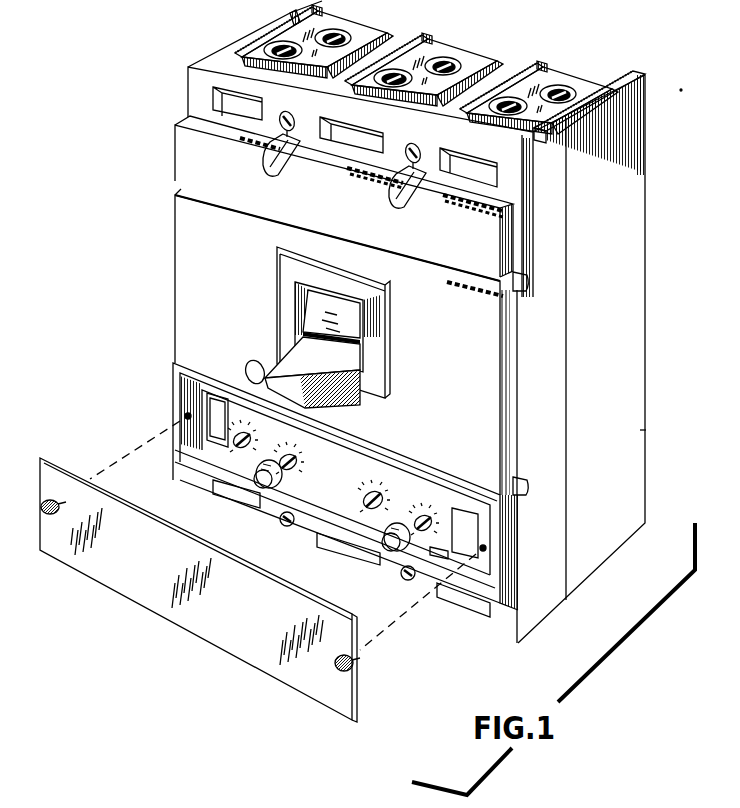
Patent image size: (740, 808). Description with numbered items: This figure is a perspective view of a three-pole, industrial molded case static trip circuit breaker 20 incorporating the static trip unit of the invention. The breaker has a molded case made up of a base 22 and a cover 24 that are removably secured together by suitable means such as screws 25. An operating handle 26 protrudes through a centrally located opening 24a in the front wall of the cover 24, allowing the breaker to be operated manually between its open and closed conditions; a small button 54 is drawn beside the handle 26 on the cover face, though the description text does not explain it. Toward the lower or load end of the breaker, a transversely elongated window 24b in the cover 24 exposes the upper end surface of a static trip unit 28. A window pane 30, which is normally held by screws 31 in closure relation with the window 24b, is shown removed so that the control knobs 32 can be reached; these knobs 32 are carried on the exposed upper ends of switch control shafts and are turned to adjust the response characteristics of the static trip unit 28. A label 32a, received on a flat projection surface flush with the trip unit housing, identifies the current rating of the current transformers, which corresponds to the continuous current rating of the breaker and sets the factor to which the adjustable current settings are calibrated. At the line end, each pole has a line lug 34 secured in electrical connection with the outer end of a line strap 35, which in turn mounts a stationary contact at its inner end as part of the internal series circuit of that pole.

The static trip circuit breaker 20 is at (160, 275).
The base 22 is at (603, 550).
The cover 24 is at (537, 616).
The opening 24a is at (298, 301).
The window 24b is at (484, 550).
The screws 25 is at (268, 139).
The operating handle 26 is at (302, 357).
The static trip unit 28 is at (328, 489).
The window pane 30 is at (240, 641).
The screws 31 is at (51, 516).
The control knobs 32 is at (246, 446).
The label 32a is at (420, 533).
The line lug 34 is at (548, 80).
The line strap 35 is at (600, 84).
The push-to-trip button 54 is at (246, 371).